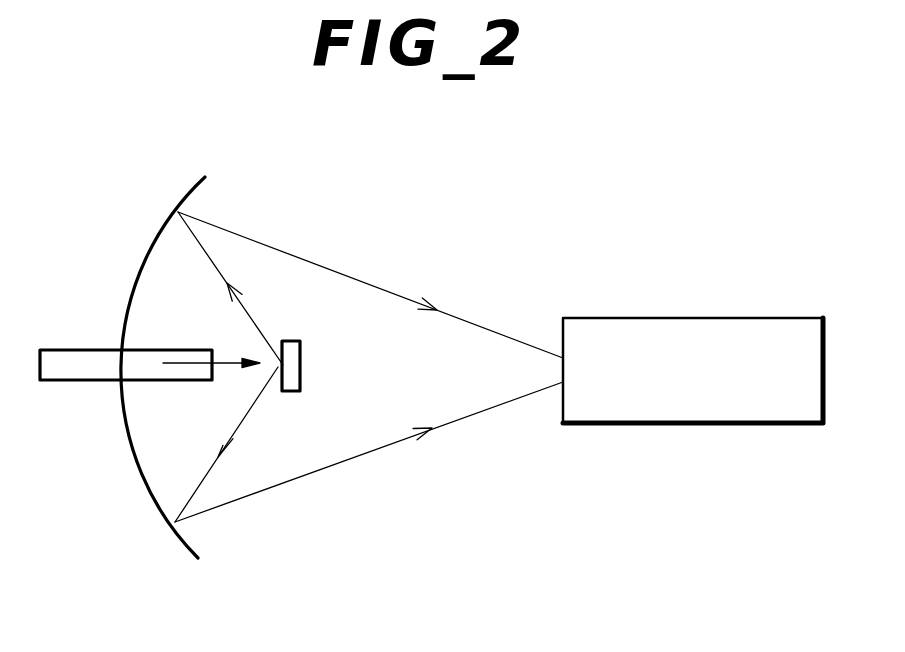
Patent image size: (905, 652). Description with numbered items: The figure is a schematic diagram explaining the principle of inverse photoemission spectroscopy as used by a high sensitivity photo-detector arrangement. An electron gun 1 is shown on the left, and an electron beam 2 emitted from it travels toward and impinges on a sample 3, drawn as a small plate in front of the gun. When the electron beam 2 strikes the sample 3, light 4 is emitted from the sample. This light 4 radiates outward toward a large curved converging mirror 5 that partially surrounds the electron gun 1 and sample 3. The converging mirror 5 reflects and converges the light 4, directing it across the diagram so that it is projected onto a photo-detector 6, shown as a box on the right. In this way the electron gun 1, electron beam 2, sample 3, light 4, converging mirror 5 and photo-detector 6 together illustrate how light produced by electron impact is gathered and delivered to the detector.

The electron gun 1 is at (62, 350).
The electron beam 2 is at (222, 360).
The sample 3 is at (302, 362).
The light 4 is at (245, 310).
The converging mirror 5 is at (153, 248).
The photo-detector 6 is at (698, 318).